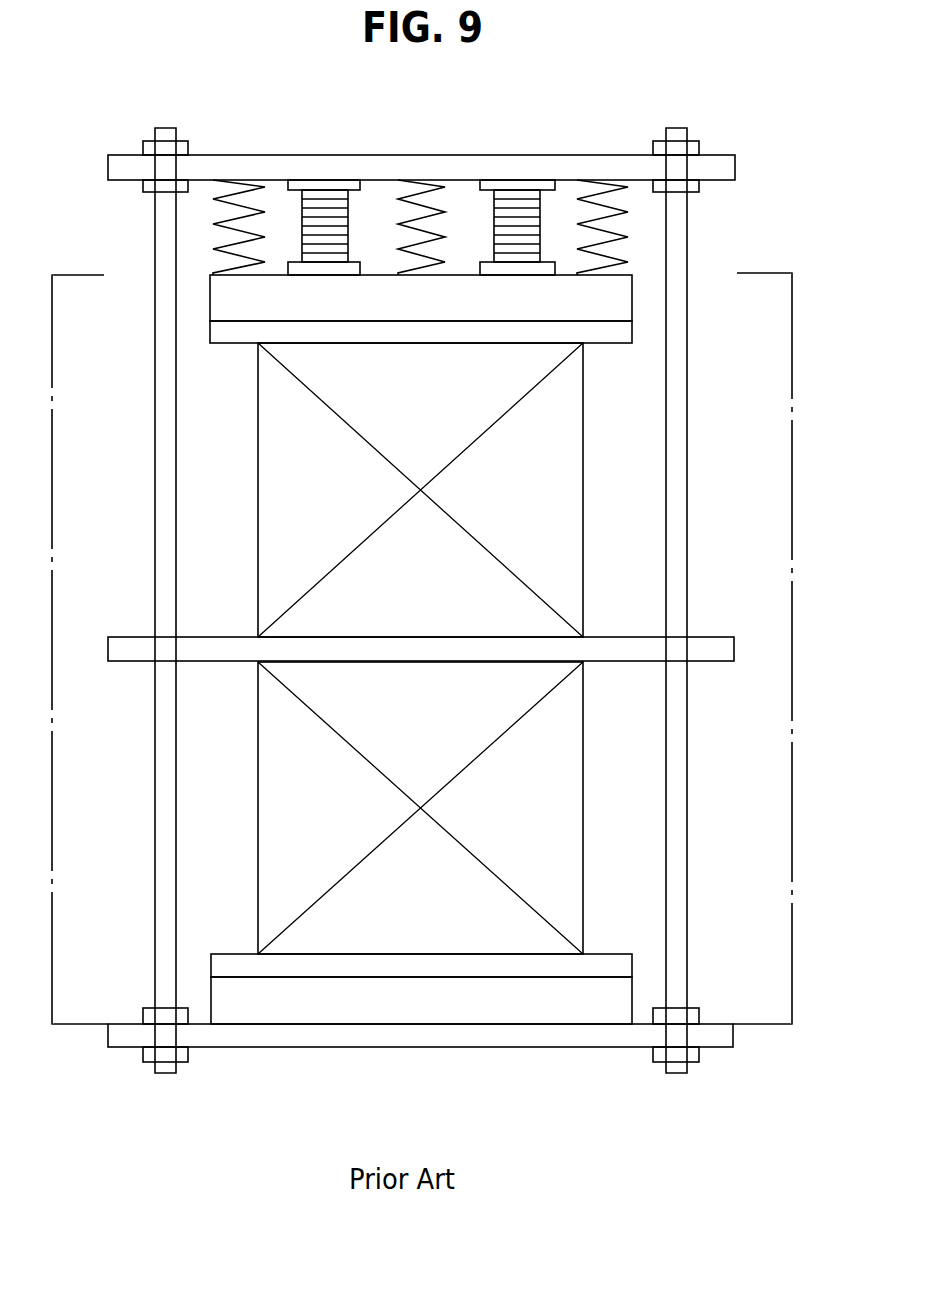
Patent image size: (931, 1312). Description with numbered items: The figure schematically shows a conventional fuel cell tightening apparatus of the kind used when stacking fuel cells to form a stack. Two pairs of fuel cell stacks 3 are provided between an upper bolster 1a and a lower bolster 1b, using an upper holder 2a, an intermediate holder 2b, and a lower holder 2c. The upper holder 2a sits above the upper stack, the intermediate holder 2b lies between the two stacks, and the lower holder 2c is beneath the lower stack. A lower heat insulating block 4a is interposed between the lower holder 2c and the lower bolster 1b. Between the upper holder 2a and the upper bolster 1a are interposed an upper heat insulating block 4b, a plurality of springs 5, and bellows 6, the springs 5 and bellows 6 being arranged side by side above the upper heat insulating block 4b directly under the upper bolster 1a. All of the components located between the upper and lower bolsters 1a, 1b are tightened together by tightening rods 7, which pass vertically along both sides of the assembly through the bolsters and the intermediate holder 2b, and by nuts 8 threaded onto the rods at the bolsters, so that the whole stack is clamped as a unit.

The upper bolster 1a is at (722, 167).
The lower bolster 1b is at (435, 1033).
The upper holder 2a is at (222, 332).
The intermediate holder 2b is at (213, 650).
The lower holder 2c is at (252, 965).
The fuel cell stack 3 is at (552, 533).
The lower heat insulating block 4a is at (608, 1002).
The upper heat insulating block 4b is at (227, 296).
The spring 5 is at (237, 200).
The bellows 6 is at (313, 218).
The tightening rod 7 is at (160, 805).
The nut 8 is at (676, 148).